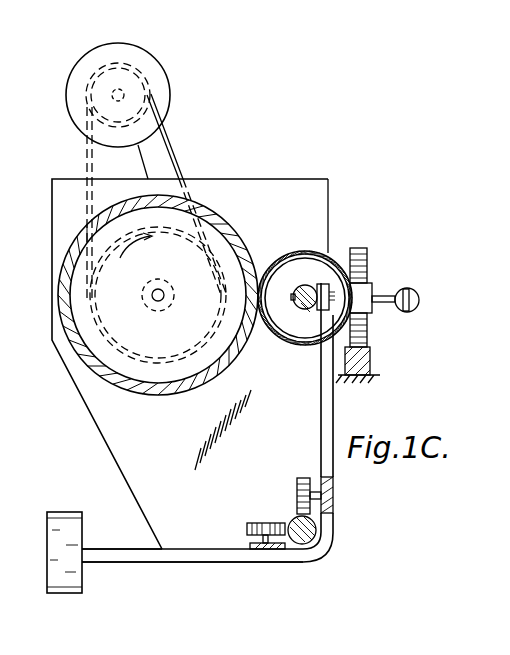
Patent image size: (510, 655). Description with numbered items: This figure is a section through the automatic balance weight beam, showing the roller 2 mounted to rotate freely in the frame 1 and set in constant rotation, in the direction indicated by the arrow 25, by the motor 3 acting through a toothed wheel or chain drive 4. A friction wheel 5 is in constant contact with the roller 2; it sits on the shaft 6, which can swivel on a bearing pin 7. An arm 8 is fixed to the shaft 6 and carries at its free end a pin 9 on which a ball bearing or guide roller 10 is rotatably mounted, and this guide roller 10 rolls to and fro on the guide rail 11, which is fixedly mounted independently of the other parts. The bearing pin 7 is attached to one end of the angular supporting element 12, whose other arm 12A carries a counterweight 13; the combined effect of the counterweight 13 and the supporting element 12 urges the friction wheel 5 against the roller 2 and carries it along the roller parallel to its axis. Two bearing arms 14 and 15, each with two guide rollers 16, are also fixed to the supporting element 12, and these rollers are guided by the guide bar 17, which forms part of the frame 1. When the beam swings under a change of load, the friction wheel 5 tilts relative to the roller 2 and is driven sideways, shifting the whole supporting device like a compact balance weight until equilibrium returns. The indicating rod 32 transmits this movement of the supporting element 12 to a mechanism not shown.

The frame 1 is at (105, 420).
The roller 2 is at (165, 395).
The motor 3 is at (99, 53).
The chain drive 4 is at (172, 154).
The friction wheel 5 is at (297, 253).
The shaft 6 is at (303, 310).
The bearing pin 7 is at (293, 298).
The arm 8 is at (372, 290).
The pin 9 is at (383, 304).
The guide roller 10 is at (358, 250).
The guide rail 11 is at (368, 360).
The angular supporting element 12 is at (333, 398).
The arm 12A is at (170, 557).
The counterweight 13 is at (78, 578).
The bearing arm 14 is at (335, 497).
The bearing arm 15 is at (250, 546).
The guide rollers 16 is at (283, 523).
The guide bar 17 is at (312, 532).
The arrow 25 is at (119, 256).
The indicating rod 32 is at (408, 292).